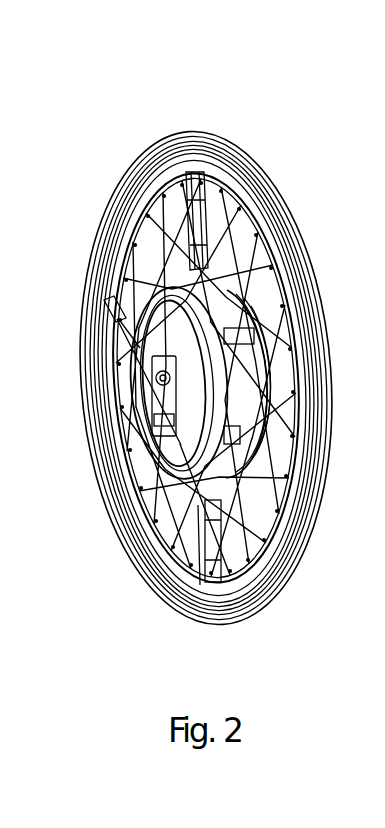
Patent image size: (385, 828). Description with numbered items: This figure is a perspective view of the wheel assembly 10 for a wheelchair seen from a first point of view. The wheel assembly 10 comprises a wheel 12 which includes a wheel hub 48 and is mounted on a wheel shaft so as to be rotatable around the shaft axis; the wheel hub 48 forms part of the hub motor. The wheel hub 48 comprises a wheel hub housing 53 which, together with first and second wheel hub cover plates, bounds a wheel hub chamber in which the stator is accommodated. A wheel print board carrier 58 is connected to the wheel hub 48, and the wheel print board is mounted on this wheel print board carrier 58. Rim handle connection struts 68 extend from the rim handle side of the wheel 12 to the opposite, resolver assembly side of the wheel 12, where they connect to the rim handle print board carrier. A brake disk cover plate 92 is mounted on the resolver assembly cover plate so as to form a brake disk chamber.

The wheel assembly 10 is at (254, 80).
The wheel 12 is at (264, 181).
The wheel print board carrier 58 is at (222, 288).
The rim handle connection struts 68 is at (253, 308).
The wheel hub housing 53 is at (245, 408).
The wheel hub 48 is at (148, 338).
The brake disk cover plate 92 is at (125, 293).